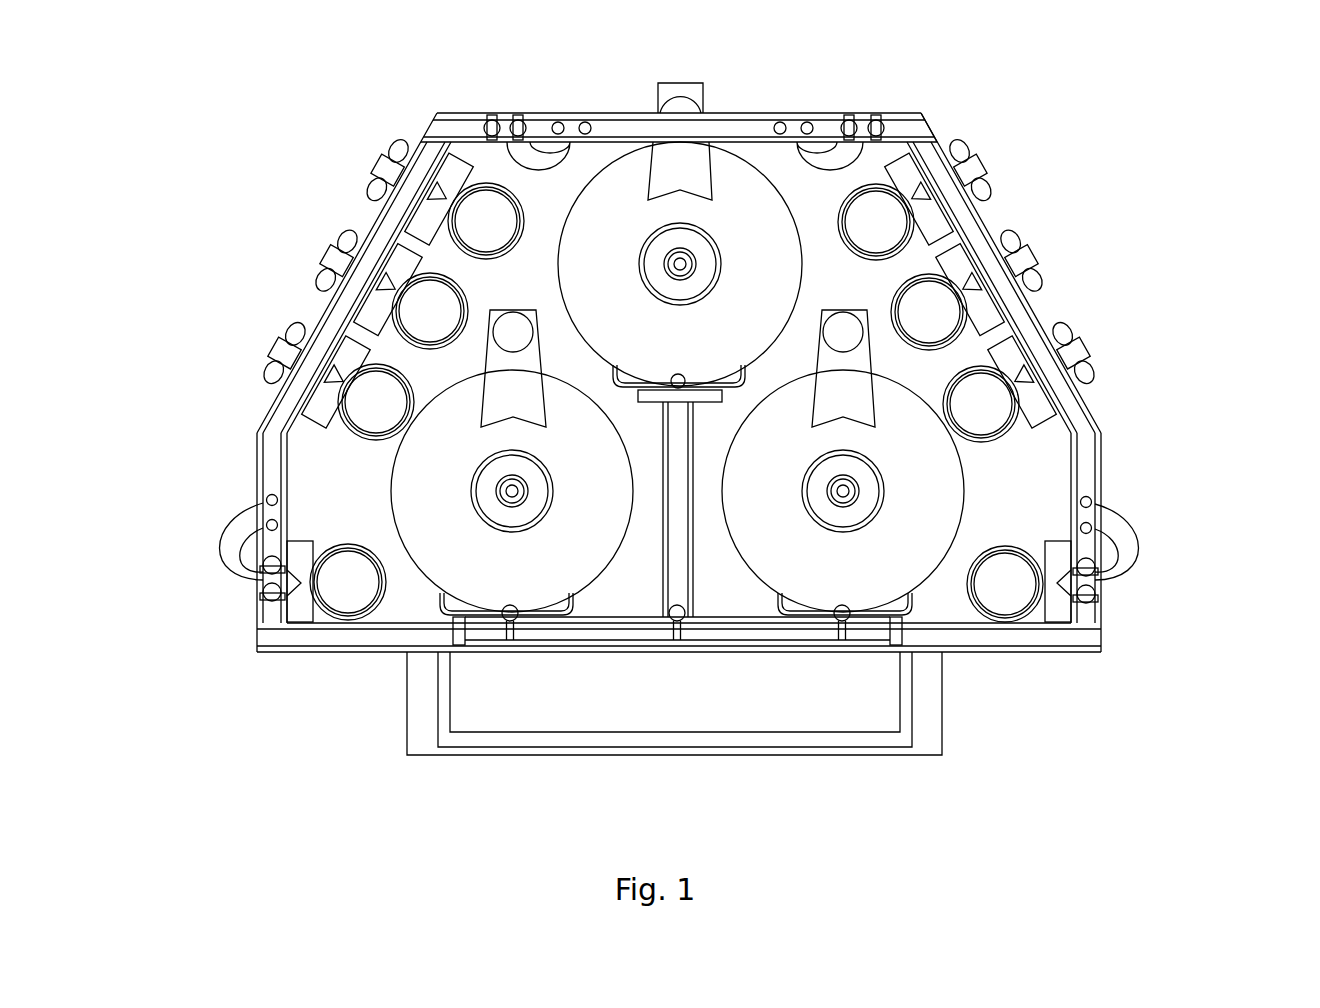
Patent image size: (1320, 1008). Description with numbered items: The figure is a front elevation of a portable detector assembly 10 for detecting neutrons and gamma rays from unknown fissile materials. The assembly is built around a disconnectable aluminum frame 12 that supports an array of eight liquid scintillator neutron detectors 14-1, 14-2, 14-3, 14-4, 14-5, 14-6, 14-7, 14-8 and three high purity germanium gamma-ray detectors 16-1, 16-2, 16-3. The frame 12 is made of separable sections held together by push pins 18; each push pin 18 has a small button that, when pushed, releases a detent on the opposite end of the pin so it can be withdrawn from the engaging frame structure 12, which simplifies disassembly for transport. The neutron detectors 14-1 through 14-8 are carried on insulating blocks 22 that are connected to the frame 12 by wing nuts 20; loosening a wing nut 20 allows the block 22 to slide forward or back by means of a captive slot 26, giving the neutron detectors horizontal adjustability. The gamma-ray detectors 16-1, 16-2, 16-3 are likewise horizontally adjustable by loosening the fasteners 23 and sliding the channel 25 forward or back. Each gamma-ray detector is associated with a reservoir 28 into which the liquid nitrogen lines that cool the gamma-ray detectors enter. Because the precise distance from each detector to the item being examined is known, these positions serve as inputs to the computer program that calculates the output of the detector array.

The portable detector assembly 10 is at (1135, 243).
The disconnectable aluminum frame 12 is at (1088, 434).
The liquid scintillator neutron detector 14-1 is at (348, 582).
The liquid scintillator neutron detector 14-2 is at (376, 402).
The liquid scintillator neutron detector 14-3 is at (430, 311).
The liquid scintillator neutron detector 14-4 is at (486, 221).
The liquid scintillator neutron detector 14-5 is at (876, 222).
The liquid scintillator neutron detector 14-6 is at (929, 312).
The liquid scintillator neutron detector 14-7 is at (981, 404).
The liquid scintillator neutron detector 14-8 is at (1005, 584).
The high purity germanium gamma-ray detector 16-1 is at (695, 251).
The high purity germanium gamma-ray detector 16-2 is at (855, 506).
The high purity germanium gamma-ray detector 16-3 is at (507, 509).
The push pin 18 is at (516, 116).
The wing nut 20 is at (983, 165).
The insulating block 22 is at (1038, 400).
The fastener 23 is at (671, 385).
The channel 25 is at (607, 382).
The captive slot 26 is at (324, 381).
The reservoir 28 is at (677, 377).